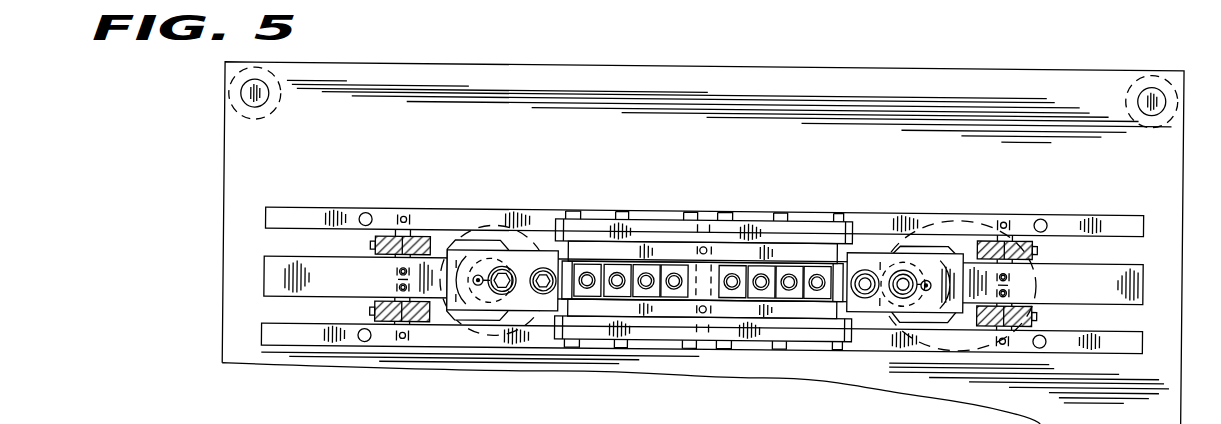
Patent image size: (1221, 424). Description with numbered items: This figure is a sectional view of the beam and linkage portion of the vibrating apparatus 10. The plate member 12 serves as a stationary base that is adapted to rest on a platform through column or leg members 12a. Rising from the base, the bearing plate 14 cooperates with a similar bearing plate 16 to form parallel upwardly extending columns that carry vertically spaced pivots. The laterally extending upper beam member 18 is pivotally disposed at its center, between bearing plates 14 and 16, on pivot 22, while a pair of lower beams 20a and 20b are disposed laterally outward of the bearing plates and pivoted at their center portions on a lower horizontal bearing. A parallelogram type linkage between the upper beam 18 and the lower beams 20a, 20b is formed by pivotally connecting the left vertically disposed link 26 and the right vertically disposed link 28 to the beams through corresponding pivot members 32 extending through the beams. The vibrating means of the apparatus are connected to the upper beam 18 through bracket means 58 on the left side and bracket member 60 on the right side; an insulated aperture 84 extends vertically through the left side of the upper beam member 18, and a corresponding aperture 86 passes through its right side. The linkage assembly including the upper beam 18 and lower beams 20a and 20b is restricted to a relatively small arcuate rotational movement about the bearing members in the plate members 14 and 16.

The surgical stapler cartridge assembly 10 is at (195, 256).
The plate member 12 is at (235, 149).
The leg members 12a is at (245, 100).
The bearing plate 14 is at (823, 315).
The bearing plate 16 is at (649, 250).
The upper beam member 18 is at (270, 273).
The lower beam 20a is at (270, 330).
The lower beam 20b is at (265, 214).
The pivot 22 is at (745, 232).
The left vertically disposed link 26 is at (372, 244).
The right vertically disposed link 28 is at (1038, 251).
The pivot members 32 is at (396, 292).
The bracket means 58 is at (530, 250).
The bracket member 60 is at (882, 250).
The insulated aperture 84 is at (481, 238).
The insulated aperture 86 is at (940, 258).